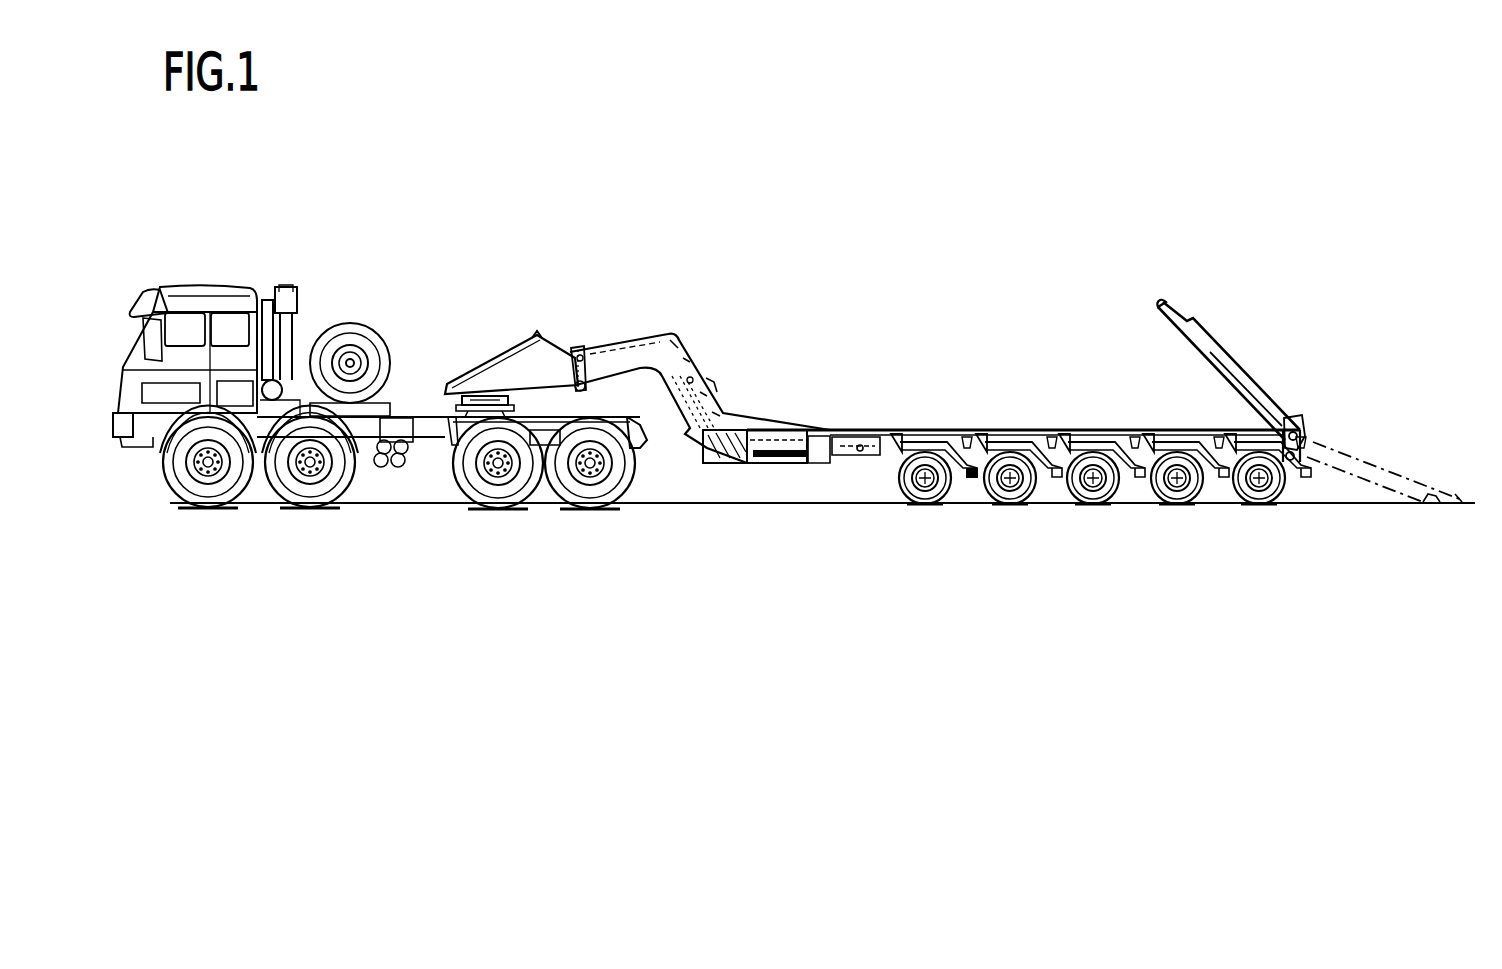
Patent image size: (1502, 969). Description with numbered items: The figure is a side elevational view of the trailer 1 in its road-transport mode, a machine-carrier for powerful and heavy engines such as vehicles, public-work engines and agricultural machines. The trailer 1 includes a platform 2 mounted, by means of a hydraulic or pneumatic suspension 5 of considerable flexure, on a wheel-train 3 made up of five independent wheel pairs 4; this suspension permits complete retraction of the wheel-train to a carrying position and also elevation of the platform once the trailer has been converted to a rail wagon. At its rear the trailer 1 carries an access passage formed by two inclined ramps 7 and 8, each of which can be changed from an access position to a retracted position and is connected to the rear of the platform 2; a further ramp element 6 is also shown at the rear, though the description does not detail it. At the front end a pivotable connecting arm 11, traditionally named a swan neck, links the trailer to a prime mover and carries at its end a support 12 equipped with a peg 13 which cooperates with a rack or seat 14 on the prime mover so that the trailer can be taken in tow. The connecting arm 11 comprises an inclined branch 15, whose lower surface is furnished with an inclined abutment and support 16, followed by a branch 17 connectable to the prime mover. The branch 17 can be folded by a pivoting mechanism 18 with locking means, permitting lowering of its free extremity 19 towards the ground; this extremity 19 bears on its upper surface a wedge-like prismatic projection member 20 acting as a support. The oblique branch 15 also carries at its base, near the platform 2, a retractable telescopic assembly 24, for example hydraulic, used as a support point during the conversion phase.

The trailer 1 is at (790, 506).
The platform 2 is at (1003, 408).
The wheel-train 3 is at (1180, 522).
The wheel pairs 4 is at (920, 500).
The hydraulic or pneumatic suspension 5 is at (968, 490).
The loading ramp (lowered position) 6 is at (1333, 440).
The inclined ramp 7 is at (1214, 352).
The inclined ramp 8 is at (1257, 406).
The connecting arm 11 is at (656, 348).
The support 12 is at (515, 398).
The peg 13 is at (464, 395).
The rack or seat 14 is at (430, 398).
The inclined branch 15 is at (710, 376).
The inclined abutment and support 16 is at (690, 448).
The branch 17 is at (553, 338).
The pivoting mechanism 18 is at (586, 348).
The free extremity 19 is at (540, 348).
The wedge-like prismatic projection member 20 is at (537, 335).
The retractable telescopic assembly 24 is at (722, 403).